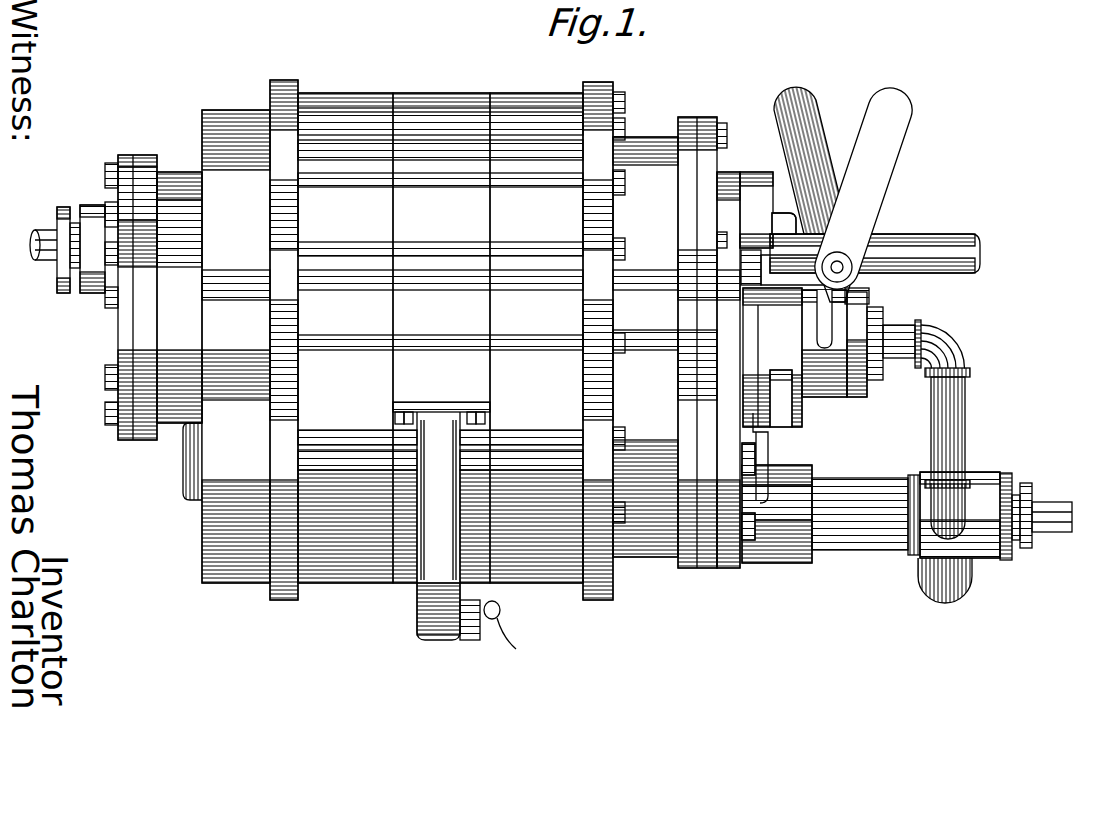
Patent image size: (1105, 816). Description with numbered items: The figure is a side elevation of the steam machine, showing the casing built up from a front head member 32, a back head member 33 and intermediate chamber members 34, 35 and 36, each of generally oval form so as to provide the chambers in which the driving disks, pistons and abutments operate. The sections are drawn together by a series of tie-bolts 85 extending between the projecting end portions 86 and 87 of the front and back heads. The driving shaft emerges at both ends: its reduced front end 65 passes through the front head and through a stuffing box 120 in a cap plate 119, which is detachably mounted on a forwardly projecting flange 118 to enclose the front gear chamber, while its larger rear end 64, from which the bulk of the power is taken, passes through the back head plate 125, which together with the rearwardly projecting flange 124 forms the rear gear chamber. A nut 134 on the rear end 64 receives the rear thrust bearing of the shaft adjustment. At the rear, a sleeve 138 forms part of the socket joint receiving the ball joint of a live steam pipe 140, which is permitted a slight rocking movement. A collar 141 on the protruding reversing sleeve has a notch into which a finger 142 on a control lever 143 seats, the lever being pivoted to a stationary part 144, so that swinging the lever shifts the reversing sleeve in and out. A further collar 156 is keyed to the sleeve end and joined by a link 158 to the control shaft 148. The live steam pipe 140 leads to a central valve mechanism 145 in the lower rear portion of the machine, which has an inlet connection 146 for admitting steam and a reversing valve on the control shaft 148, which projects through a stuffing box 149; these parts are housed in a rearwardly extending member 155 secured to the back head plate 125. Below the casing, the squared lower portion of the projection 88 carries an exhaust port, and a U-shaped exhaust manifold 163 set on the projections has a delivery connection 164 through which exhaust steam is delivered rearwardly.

The front head member 32 is at (218, 106).
The back head member 33 is at (630, 133).
The intermediate chamber member 34 is at (320, 153).
The intermediate chamber member 35 is at (433, 150).
The intermediate chamber member 36 is at (517, 148).
The rear end of the driving shaft 64 is at (965, 234).
The front end of the driving shaft 65 is at (45, 252).
The tie-bolts 85 is at (400, 122).
The projecting end portion of the front head 86 is at (283, 80).
The projecting end portion of the back head 87 is at (608, 83).
The projection 88 is at (526, 304).
The forwardly projecting flange 118 is at (173, 421).
The cap plate 119 is at (127, 323).
The stuffing box 120 is at (63, 205).
The rearwardly projecting flange 124 is at (647, 160).
The back head plate 125 is at (705, 187).
The nut 134 is at (787, 223).
The sleeve 138 is at (853, 398).
The live steam pipe 140 is at (903, 337).
The collar 141 is at (830, 398).
The finger 142 is at (862, 300).
The control lever 143 is at (878, 107).
The stationary part 144 is at (838, 261).
The central valve mechanism 145 is at (982, 470).
The inlet connection 146 is at (930, 597).
The control shaft 148 is at (1050, 507).
The stuffing box 149 is at (1006, 561).
The rearwardly extending member 155 is at (782, 563).
The collar 156 is at (770, 312).
The link 158 is at (778, 430).
The exhaust manifold 163 is at (417, 640).
The delivery connection 164 is at (508, 626).